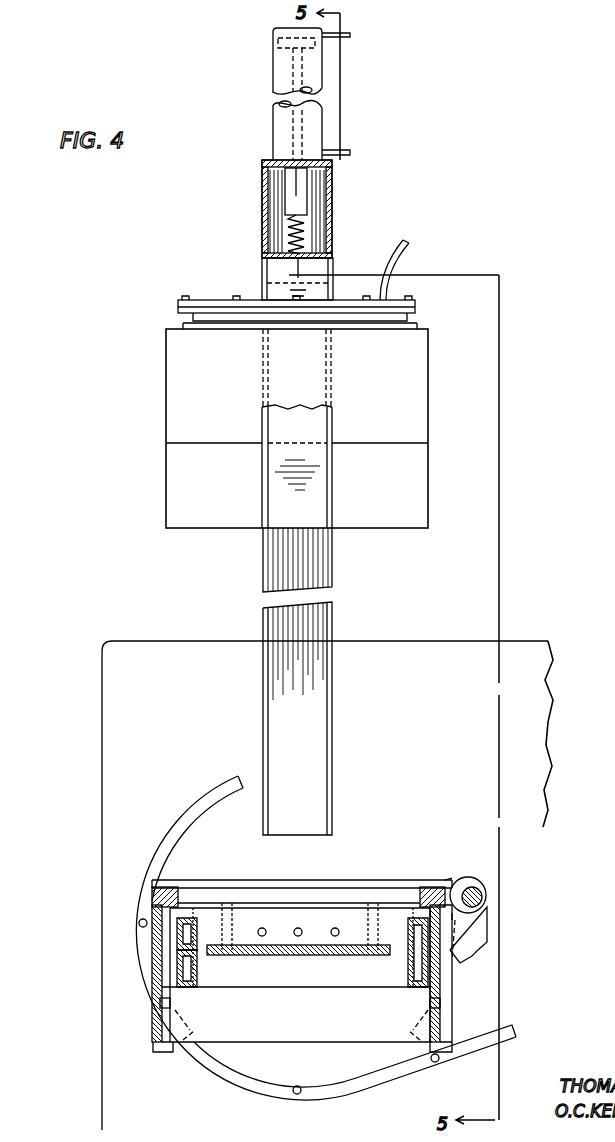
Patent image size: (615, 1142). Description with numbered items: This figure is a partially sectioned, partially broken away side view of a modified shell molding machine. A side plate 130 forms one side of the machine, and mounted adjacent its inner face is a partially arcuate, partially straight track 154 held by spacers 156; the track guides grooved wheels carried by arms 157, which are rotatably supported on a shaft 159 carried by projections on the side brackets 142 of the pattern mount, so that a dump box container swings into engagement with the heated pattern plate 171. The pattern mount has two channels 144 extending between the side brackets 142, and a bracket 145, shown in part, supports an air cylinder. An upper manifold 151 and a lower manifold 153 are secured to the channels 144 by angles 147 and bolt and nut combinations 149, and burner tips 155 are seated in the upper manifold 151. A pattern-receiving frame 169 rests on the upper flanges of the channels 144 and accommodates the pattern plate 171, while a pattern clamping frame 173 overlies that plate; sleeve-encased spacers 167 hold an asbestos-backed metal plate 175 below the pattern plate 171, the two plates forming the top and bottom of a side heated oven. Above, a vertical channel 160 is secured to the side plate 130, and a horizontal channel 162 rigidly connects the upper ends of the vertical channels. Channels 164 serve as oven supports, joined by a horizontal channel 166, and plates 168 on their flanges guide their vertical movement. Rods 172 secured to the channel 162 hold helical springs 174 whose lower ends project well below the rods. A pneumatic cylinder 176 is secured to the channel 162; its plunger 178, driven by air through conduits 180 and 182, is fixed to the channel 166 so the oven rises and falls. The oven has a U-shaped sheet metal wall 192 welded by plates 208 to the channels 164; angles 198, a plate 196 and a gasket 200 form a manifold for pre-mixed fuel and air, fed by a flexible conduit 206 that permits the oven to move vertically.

The side plate 130 is at (531, 657).
The side bracket 142 is at (398, 882).
The channel 144 is at (158, 1030).
The bracket 145 is at (163, 1055).
The angle 147 is at (182, 1000).
The bolt and nut combination 149 is at (163, 1000).
The upper manifold 151 is at (180, 945).
The lower manifold 153 is at (183, 970).
The track 154 is at (205, 792).
The burner tip 155 is at (190, 930).
The spacer 156 is at (138, 921).
The arm 157 is at (488, 940).
The shaft 159 is at (480, 897).
The vertical channel 160 is at (332, 612).
The horizontal channel 162 is at (332, 180).
The channel 164 is at (275, 512).
The horizontal channel 166 is at (333, 268).
The sleeve-encased spacer 167 is at (242, 936).
The plate 168 is at (262, 483).
The pattern-receiving frame 169 is at (158, 897).
The pattern plate 171 is at (340, 902).
The rod 172 is at (290, 190).
The pattern clamping frame 173 is at (440, 888).
The helical spring 174 is at (290, 236).
The asbestos-backed metal plate 175 is at (292, 947).
The pneumatic cylinder 176 is at (318, 113).
The plunger 178 is at (272, 62).
The conduit 180 is at (350, 35).
The conduit 182 is at (350, 152).
The oven wall 192 is at (172, 402).
The plate 196 is at (208, 300).
The angle 198 is at (407, 317).
The gasket 200 is at (176, 318).
The flexible conduit 206 is at (409, 247).
The plate 208 is at (174, 489).